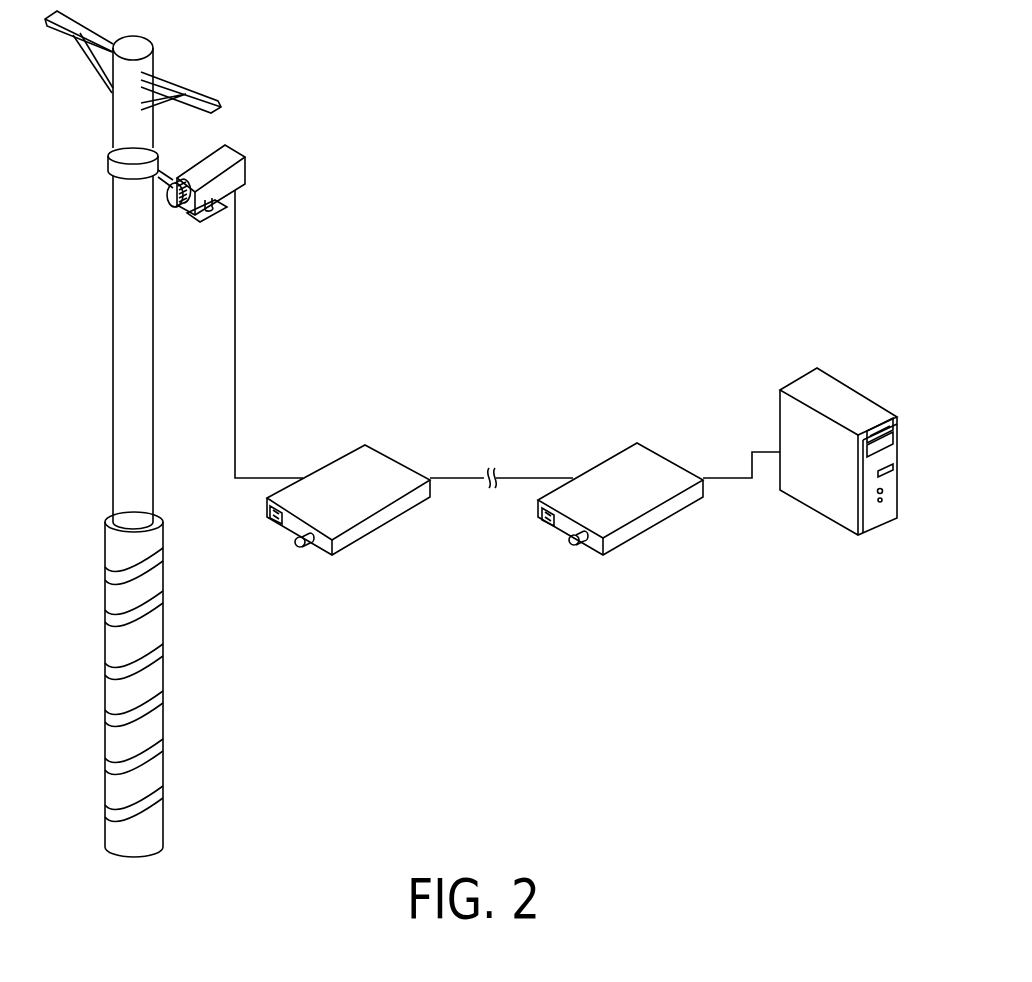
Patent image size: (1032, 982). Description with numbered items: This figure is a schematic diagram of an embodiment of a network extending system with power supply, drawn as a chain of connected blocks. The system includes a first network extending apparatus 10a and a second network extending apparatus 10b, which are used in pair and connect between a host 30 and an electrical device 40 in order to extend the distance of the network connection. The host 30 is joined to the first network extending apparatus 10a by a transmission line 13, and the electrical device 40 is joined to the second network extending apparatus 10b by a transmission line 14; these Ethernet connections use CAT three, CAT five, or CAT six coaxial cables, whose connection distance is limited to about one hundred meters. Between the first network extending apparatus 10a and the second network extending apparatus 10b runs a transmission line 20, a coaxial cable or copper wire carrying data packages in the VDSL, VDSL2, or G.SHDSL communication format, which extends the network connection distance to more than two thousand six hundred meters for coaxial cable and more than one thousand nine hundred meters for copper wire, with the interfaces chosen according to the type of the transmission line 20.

The electrical device 40 is at (227, 155).
The transmission line 14 is at (237, 312).
The second network extending apparatus 10b is at (352, 467).
The first network extending apparatus 10a is at (605, 477).
The transmission line 20 is at (465, 481).
The transmission line 13 is at (748, 462).
The host 30 is at (828, 388).